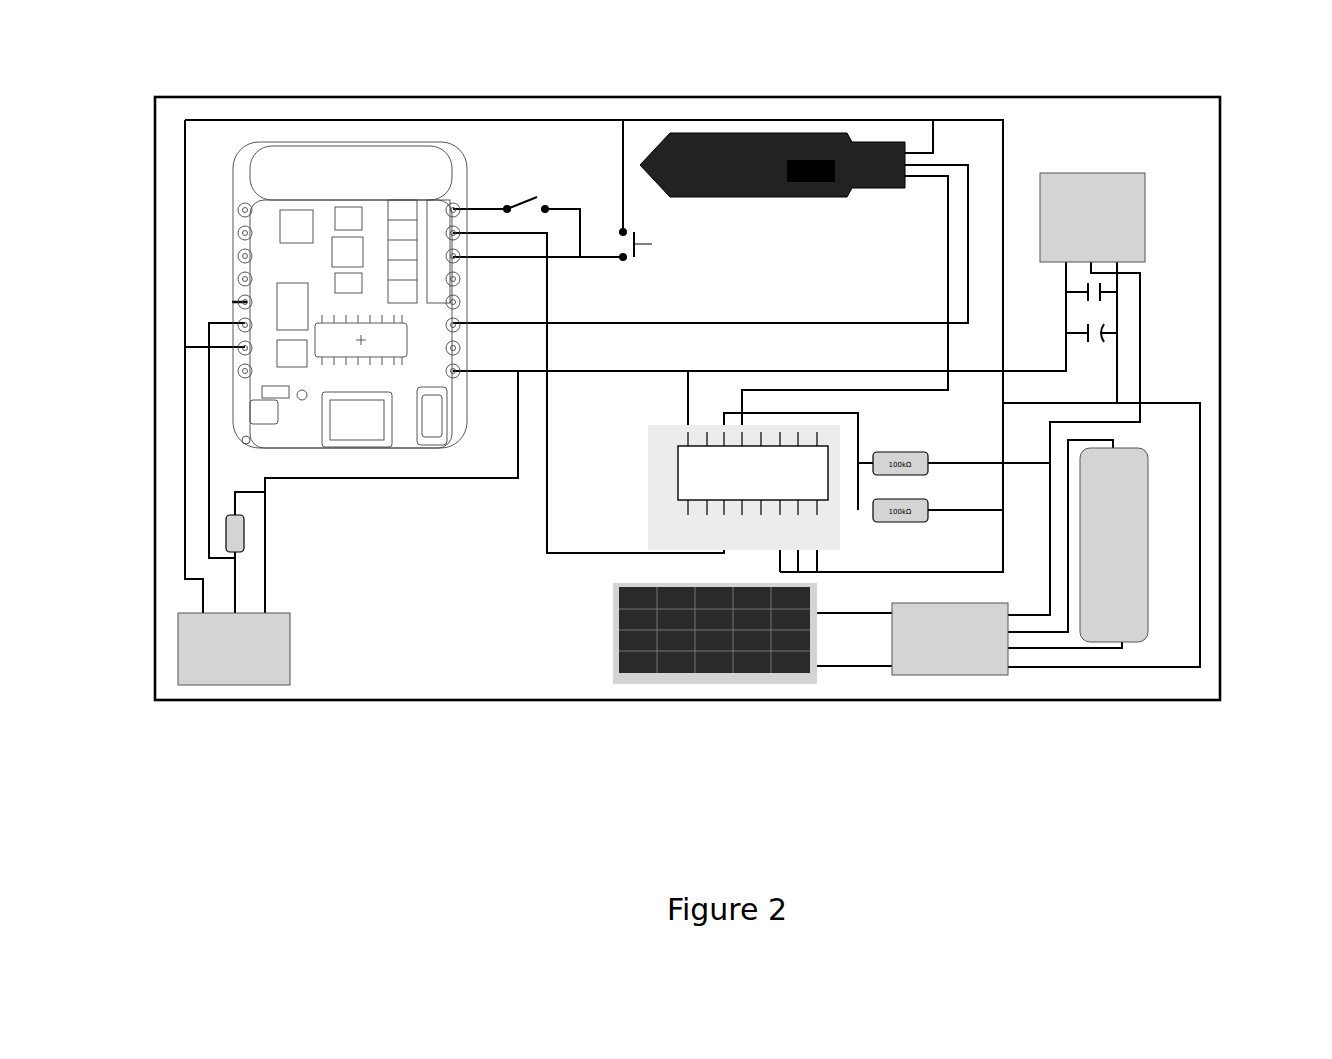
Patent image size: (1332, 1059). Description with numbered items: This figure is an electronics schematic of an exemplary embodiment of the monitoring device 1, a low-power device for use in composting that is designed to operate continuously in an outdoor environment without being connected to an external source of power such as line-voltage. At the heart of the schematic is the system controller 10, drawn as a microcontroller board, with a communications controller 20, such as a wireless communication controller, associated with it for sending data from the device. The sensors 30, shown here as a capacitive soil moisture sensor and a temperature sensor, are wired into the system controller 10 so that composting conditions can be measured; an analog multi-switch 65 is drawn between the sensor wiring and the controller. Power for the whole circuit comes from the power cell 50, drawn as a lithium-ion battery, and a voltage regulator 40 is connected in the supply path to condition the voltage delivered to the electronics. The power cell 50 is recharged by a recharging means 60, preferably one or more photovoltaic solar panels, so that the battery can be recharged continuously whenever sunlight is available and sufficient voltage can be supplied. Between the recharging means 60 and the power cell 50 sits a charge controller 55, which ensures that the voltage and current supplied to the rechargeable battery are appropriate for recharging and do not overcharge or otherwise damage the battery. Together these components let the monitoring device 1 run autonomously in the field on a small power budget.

The monitoring device 1 is at (1205, 297).
The system controller 10 is at (362, 418).
The communications controller 20 is at (363, 170).
The sensor 30 is at (803, 133).
The voltage regulator 40 is at (1117, 237).
The power cell 50 is at (1117, 590).
The charge controller 55 is at (948, 668).
The recharging means 60 is at (650, 600).
The analog multi-switch 65 is at (688, 472).